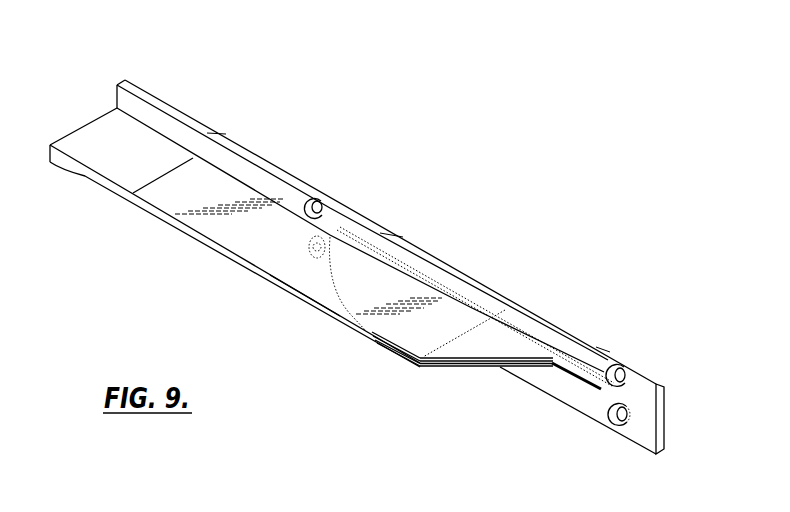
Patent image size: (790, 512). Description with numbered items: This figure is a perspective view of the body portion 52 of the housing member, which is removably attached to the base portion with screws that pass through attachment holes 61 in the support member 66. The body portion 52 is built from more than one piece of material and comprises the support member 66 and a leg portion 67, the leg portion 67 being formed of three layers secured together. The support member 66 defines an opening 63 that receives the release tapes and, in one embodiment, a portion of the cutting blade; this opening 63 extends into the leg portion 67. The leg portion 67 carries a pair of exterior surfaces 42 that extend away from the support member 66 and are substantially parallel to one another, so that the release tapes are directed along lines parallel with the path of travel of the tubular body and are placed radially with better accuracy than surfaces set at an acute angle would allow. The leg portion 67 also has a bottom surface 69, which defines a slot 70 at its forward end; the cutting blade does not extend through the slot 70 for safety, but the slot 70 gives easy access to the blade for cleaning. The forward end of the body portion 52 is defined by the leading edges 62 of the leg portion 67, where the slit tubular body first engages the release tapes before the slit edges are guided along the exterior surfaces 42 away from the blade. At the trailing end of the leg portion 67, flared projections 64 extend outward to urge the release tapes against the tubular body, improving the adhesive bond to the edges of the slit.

The body portion 52 is at (186, 68).
The support member 66 is at (124, 78).
The projections 64 is at (95, 172).
The exterior surfaces 42 is at (207, 220).
The attachment holes 61 is at (321, 205).
The bottom surface 69 is at (312, 303).
The leg portion 67 is at (338, 322).
The slot 70 is at (392, 351).
The leading edges 62 is at (470, 366).
The opening 63 is at (575, 379).